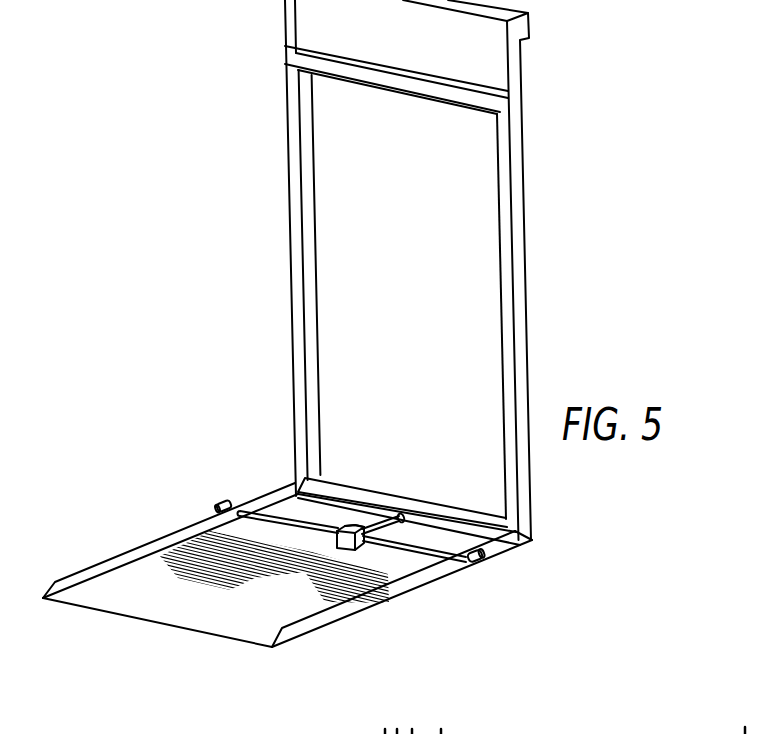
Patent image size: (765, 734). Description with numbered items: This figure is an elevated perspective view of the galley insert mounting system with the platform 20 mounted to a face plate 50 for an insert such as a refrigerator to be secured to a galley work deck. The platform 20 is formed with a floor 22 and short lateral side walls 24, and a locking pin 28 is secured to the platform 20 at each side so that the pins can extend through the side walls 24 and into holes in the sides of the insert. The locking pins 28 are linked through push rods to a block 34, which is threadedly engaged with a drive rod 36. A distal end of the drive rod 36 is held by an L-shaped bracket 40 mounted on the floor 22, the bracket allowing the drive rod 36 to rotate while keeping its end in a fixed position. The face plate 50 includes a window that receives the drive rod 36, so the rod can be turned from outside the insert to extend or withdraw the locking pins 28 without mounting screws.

The platform 20 is at (437, 617).
The floor 22 is at (192, 614).
The lateral side walls 24 is at (100, 574).
The locking pin 28 is at (226, 500).
The block 34 is at (346, 525).
The drive rod 36 is at (393, 512).
The L-shaped bracket 40 is at (336, 542).
The face plate 50 is at (507, 306).